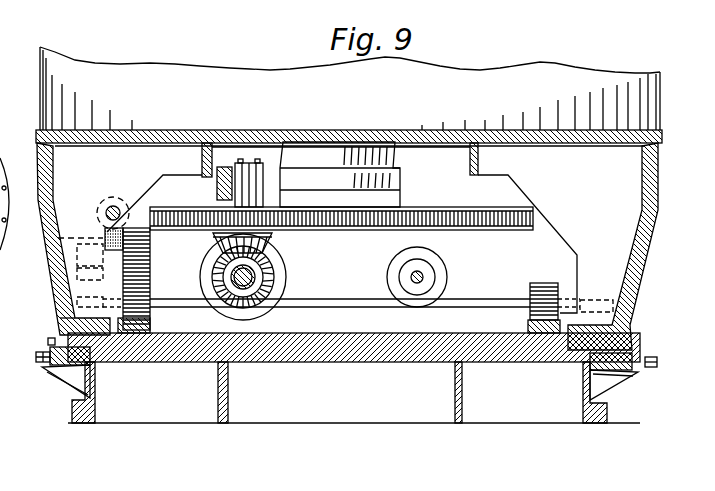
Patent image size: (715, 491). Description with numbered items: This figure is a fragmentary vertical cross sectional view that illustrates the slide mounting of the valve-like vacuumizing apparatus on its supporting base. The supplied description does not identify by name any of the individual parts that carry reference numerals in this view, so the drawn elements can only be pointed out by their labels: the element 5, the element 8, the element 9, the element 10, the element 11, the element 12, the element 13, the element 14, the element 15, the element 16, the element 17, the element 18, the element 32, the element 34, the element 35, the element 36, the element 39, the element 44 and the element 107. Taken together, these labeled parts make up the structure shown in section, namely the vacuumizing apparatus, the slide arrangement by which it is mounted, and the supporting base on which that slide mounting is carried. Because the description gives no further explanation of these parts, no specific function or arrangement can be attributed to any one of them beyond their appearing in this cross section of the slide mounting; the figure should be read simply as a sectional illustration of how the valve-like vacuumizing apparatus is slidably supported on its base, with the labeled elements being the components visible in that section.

The base 5 is at (377, 358).
The housing 8 is at (36, 135).
The clamp bracket 9 is at (53, 373).
The bearing block 10 is at (135, 333).
The gear 11 is at (152, 300).
The shaft 12 is at (445, 303).
The bushing 13 is at (56, 313).
The gear 14 is at (152, 278).
The cover plate 15 is at (70, 253).
The bearing 16 is at (118, 268).
The opening 17 is at (118, 197).
The pin 18 is at (101, 205).
The rack 32 is at (218, 208).
The cylinder 34 is at (265, 174).
The bevel gear 35 is at (213, 236).
The gear wheel 36 is at (283, 265).
The shaft 39 is at (260, 277).
The pulley 44 is at (428, 275).
The sheet marking 107 is at (16, 427).